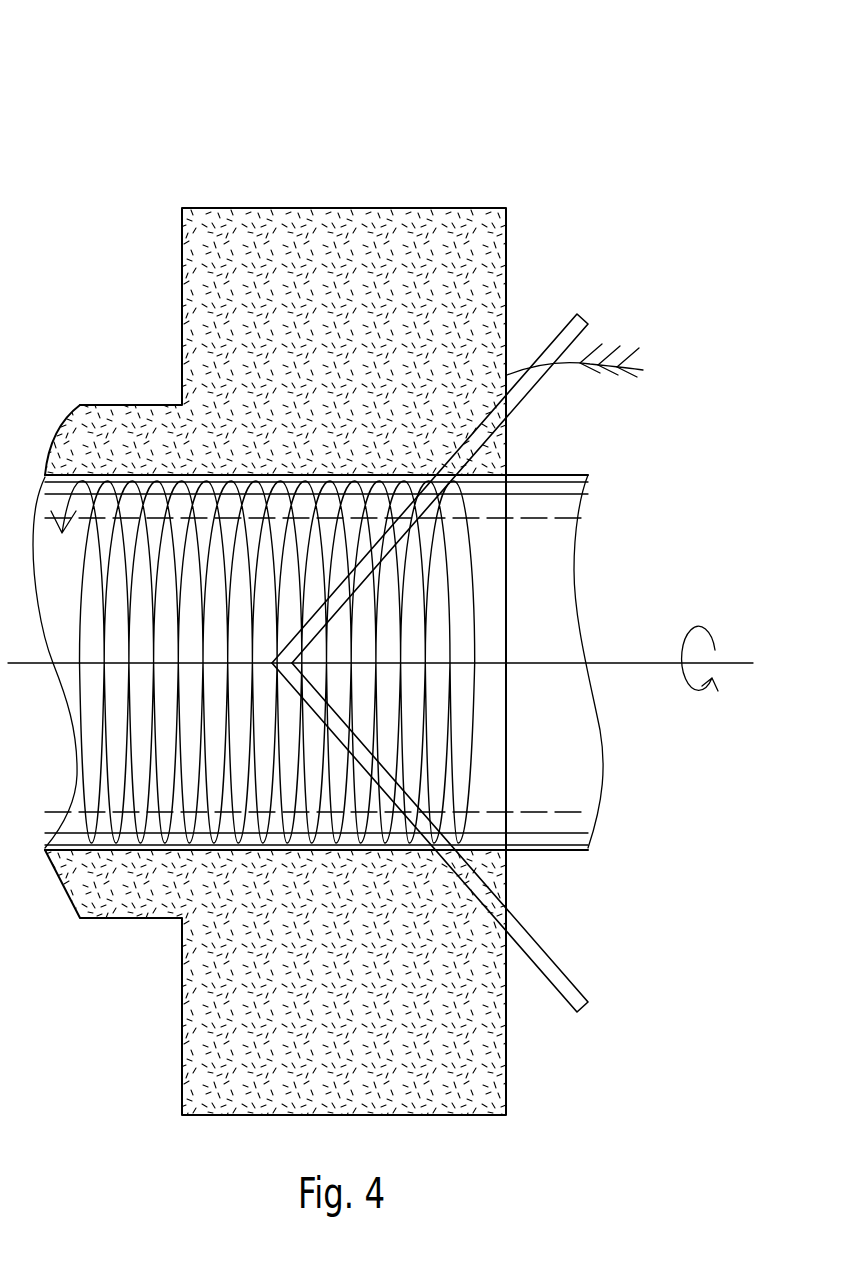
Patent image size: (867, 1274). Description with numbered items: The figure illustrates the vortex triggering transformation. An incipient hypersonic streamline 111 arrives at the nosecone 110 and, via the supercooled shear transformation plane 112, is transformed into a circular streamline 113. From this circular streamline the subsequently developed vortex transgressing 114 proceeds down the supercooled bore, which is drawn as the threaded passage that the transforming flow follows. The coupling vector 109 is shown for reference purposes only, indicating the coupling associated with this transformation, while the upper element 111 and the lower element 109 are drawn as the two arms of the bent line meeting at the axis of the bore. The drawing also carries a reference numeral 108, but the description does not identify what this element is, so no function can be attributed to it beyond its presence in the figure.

The pipe 108 is at (120, 477).
The coupling vector 109 is at (530, 932).
The nosecone 110 is at (335, 207).
The incipient hypersonic streamline 111 is at (592, 326).
The supercooled shear transformation plane 112 is at (450, 265).
The circular streamline 113 is at (537, 388).
The developed vortex transgressing 114 is at (230, 480).